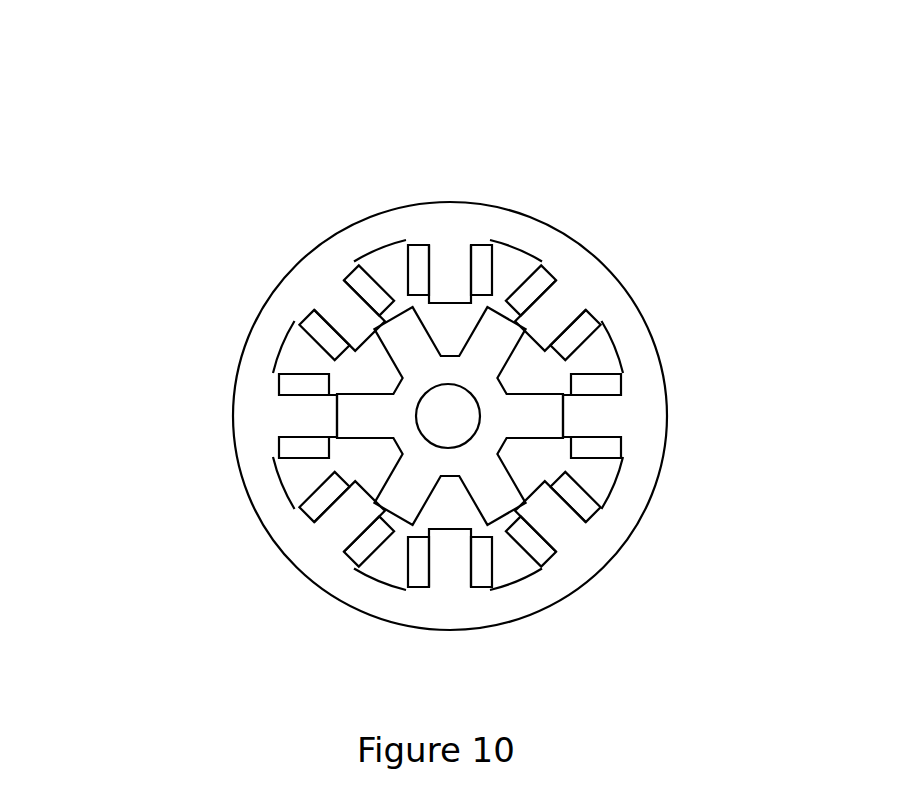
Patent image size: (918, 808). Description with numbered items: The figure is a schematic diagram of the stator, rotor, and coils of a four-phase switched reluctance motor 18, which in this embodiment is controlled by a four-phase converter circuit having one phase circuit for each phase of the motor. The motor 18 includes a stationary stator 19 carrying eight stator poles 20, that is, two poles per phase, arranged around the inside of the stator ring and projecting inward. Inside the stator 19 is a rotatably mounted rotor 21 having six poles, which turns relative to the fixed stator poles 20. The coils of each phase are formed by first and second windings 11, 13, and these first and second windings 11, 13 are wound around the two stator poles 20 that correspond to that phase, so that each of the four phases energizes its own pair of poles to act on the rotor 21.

The four-phase motor 18 is at (326, 158).
The stator 19 is at (483, 226).
The stator poles 20 is at (353, 323).
The first winding 11 is at (533, 292).
The second winding 13 is at (313, 498).
The rotor 21 is at (520, 413).